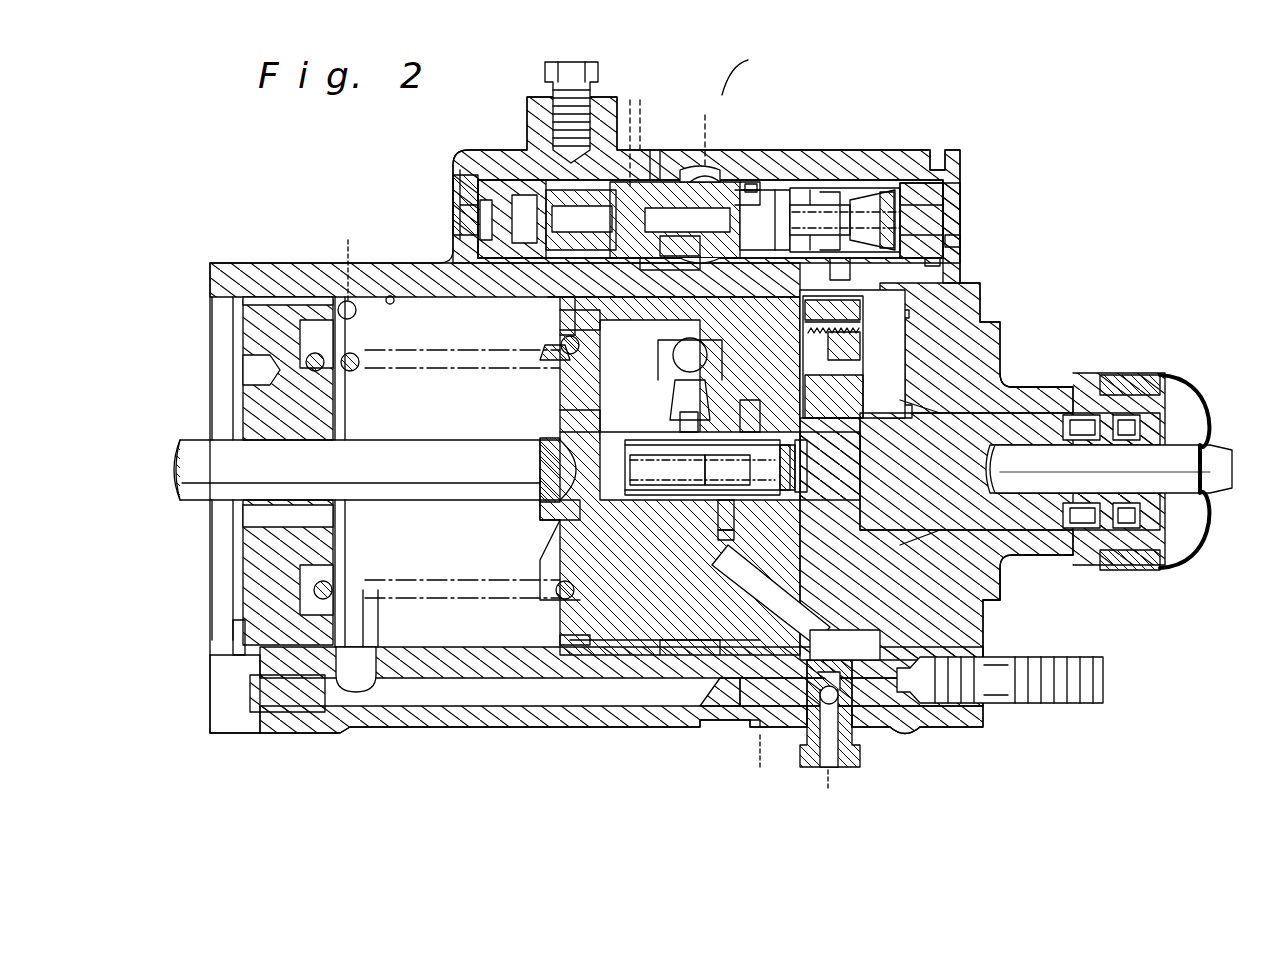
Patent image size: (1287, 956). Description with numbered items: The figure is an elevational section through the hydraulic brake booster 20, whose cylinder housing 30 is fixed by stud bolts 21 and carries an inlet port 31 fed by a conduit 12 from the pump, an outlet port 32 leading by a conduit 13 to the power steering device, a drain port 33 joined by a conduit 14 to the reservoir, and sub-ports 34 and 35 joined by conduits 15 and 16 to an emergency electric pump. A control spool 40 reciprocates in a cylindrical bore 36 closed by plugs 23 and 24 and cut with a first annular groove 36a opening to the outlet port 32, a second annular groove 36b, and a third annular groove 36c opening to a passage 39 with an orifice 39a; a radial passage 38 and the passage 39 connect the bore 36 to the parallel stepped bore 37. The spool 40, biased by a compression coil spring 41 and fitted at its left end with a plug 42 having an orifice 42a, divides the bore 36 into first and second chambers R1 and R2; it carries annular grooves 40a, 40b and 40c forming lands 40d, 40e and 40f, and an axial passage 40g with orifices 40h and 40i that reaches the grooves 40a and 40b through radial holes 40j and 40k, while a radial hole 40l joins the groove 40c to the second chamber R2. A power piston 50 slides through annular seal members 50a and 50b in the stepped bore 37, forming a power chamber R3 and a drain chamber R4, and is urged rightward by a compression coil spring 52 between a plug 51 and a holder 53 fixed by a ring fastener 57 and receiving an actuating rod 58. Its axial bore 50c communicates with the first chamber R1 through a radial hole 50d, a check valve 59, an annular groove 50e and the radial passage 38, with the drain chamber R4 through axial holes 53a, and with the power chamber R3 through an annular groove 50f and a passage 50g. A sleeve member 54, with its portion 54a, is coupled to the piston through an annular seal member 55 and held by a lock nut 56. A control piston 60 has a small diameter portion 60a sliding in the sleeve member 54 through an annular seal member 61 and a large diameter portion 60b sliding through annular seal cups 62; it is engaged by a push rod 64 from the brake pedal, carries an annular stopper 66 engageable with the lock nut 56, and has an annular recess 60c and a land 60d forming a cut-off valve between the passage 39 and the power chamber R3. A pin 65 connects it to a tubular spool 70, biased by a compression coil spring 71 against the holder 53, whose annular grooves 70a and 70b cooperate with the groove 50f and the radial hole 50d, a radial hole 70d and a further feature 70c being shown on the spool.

The conduit 12 is at (625, 78).
The conduit 13 is at (695, 92).
The conduit 14 is at (348, 232).
The conduit 15 is at (760, 778).
The conduit 16 is at (822, 782).
The hydraulic brake booster 20 is at (989, 133).
The stud bolts 21 is at (1060, 703).
The plug 23 is at (475, 242).
The plug 24 is at (955, 185).
The cylinder housing 30 is at (268, 262).
The inlet port 31 is at (646, 138).
The outlet port 32 is at (695, 160).
The drain port 33 is at (342, 300).
The sub-port 34 is at (755, 735).
The sub-port 35 is at (845, 770).
The cylindrical bore 36 is at (925, 182).
The first annular groove 36a is at (712, 168).
The second annular groove 36b is at (748, 180).
The third annular groove 36c is at (830, 272).
The stepped bore 37 is at (390, 296).
The radial passage 38 is at (548, 303).
The passage 39 is at (942, 265).
The orifice 39a is at (905, 365).
The control spool 40 is at (838, 180).
The annular groove 40a is at (655, 268).
The annular groove 40b is at (780, 188).
The annular groove 40c is at (812, 188).
The land 40d is at (693, 244).
The land 40e is at (845, 219).
The land 40f is at (868, 220).
The axial passage 40g is at (687, 217).
The orifice 40h is at (717, 191).
The orifice 40i is at (887, 188).
The radial hole 40j is at (655, 150).
The radial hole 40k is at (752, 184).
The radial hole 40l is at (833, 188).
The compression coil spring 41 is at (960, 240).
The plug 42 is at (505, 190).
The orifice 42a is at (535, 145).
The power piston 50 is at (632, 625).
The annular seal member 50a is at (560, 645).
The annular seal member 50b is at (755, 640).
The axial bore 50c is at (560, 412).
The radial hole 50d is at (749, 412).
The annular groove 50e is at (560, 318).
The annular groove 50f is at (720, 510).
The passage 50g is at (760, 565).
The plug 51 is at (250, 325).
The compression coil spring 52 is at (357, 366).
The holder 53 is at (540, 515).
The axial holes 53a is at (560, 550).
The sleeve member 54 is at (800, 420).
The check valve seat 54a is at (803, 338).
The annular seal member 55 is at (812, 375).
The lock nut 56 is at (1000, 598).
The ring fastener 57 is at (568, 362).
The actuating rod 58 is at (382, 450).
The check valve 59 is at (668, 370).
The control piston 60 is at (1077, 375).
The small diameter portion 60a is at (830, 467).
The large diameter portion 60b is at (1010, 471).
The annular recess 60c is at (898, 415).
The land 60d is at (1005, 375).
The annular seal member 61 is at (813, 465).
The annular seal cups 62 is at (1080, 535).
The push rod 64 is at (1232, 452).
The pin 65 is at (809, 467).
The annular stopper 66 is at (1008, 556).
The tubular spool 70 is at (765, 500).
The annular groove 70a is at (702, 470).
The annular groove 70b is at (721, 470).
The piston passage 70c is at (715, 540).
The radial hole 70d is at (668, 423).
The compression coil spring 71 is at (555, 440).
The first chamber R1 is at (480, 215).
The second chamber R2 is at (945, 205).
The power chamber R3 is at (868, 640).
The drain chamber R4 is at (435, 557).